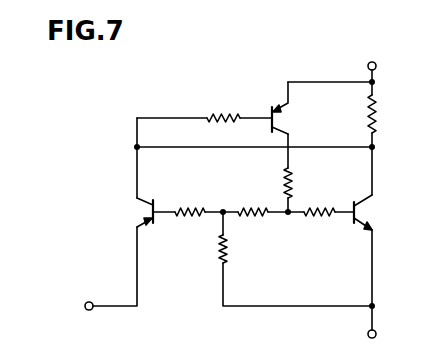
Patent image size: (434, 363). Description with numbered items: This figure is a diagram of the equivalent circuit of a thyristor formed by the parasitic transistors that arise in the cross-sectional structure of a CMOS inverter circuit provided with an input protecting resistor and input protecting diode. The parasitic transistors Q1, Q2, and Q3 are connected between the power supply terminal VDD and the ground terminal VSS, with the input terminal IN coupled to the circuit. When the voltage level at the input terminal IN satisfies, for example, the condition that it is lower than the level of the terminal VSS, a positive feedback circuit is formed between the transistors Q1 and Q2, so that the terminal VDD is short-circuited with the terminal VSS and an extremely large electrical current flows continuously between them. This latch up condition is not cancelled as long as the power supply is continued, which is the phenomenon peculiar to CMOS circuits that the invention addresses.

The parasitic transistor Q1 is at (142, 216).
The parasitic transistor Q2 is at (284, 118).
The parasitic transistor Q3 is at (366, 210).
The terminal VDD is at (383, 56).
The terminal VSS (GND) VSS is at (377, 346).
The input terminal IN is at (72, 309).